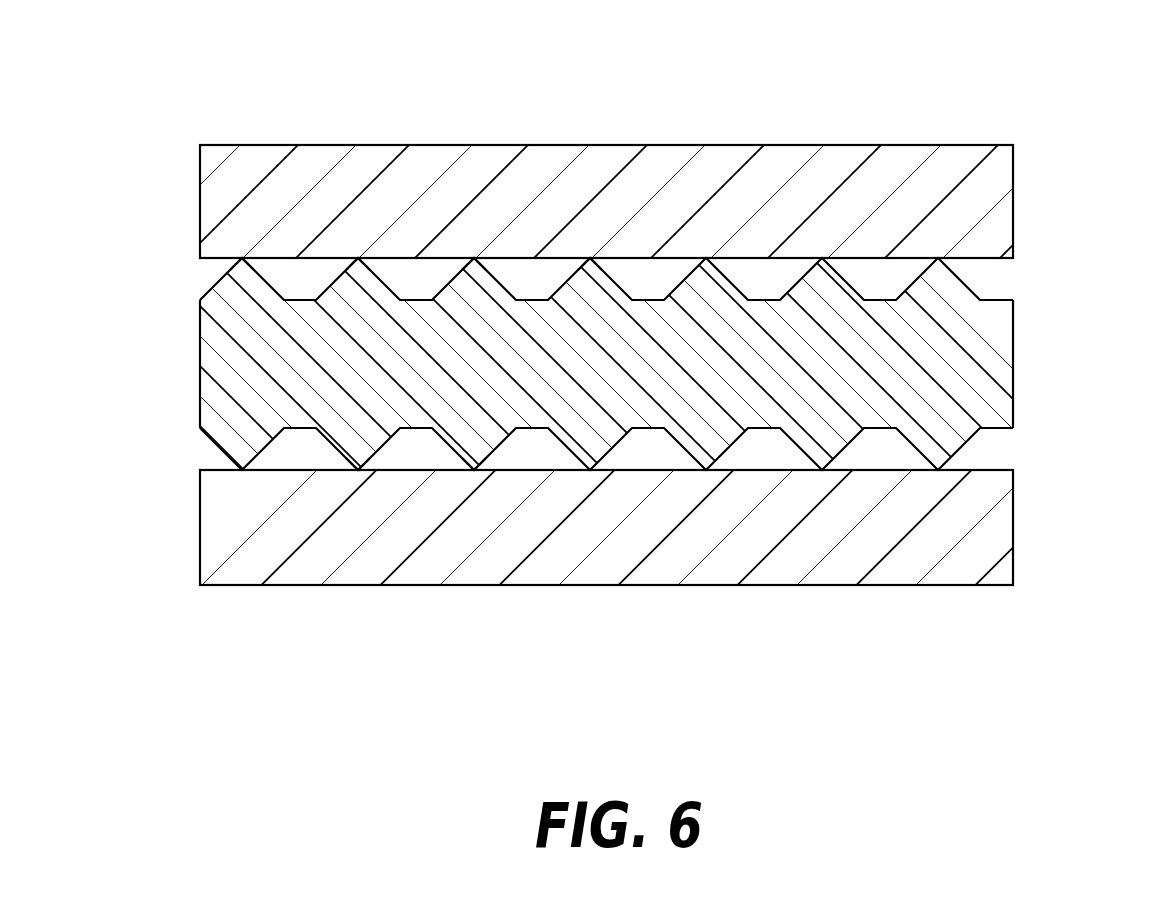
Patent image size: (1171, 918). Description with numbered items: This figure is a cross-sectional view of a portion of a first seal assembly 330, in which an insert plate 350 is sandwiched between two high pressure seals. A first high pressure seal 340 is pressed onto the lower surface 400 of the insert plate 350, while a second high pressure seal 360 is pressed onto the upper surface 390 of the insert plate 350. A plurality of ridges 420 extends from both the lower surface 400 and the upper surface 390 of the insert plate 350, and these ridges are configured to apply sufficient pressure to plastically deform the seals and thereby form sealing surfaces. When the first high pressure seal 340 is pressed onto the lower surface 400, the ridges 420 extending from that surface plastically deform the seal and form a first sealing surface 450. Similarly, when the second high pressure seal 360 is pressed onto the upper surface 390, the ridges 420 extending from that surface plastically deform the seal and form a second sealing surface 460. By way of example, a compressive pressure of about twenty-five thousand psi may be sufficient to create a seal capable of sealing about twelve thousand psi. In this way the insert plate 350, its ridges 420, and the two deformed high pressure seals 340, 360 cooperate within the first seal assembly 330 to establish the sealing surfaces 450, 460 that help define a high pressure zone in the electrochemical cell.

The first seal assembly 330 is at (158, 153).
The first high pressure seal 340 is at (1013, 520).
The insert plate 350 is at (575, 332).
The second high pressure seal 360 is at (1013, 190).
The upper surface 390 is at (1002, 299).
The lower surface 400 is at (1000, 428).
The plurality of ridges 420 is at (214, 287).
The first sealing surface 450 is at (478, 472).
The second sealing surface 460 is at (244, 258).